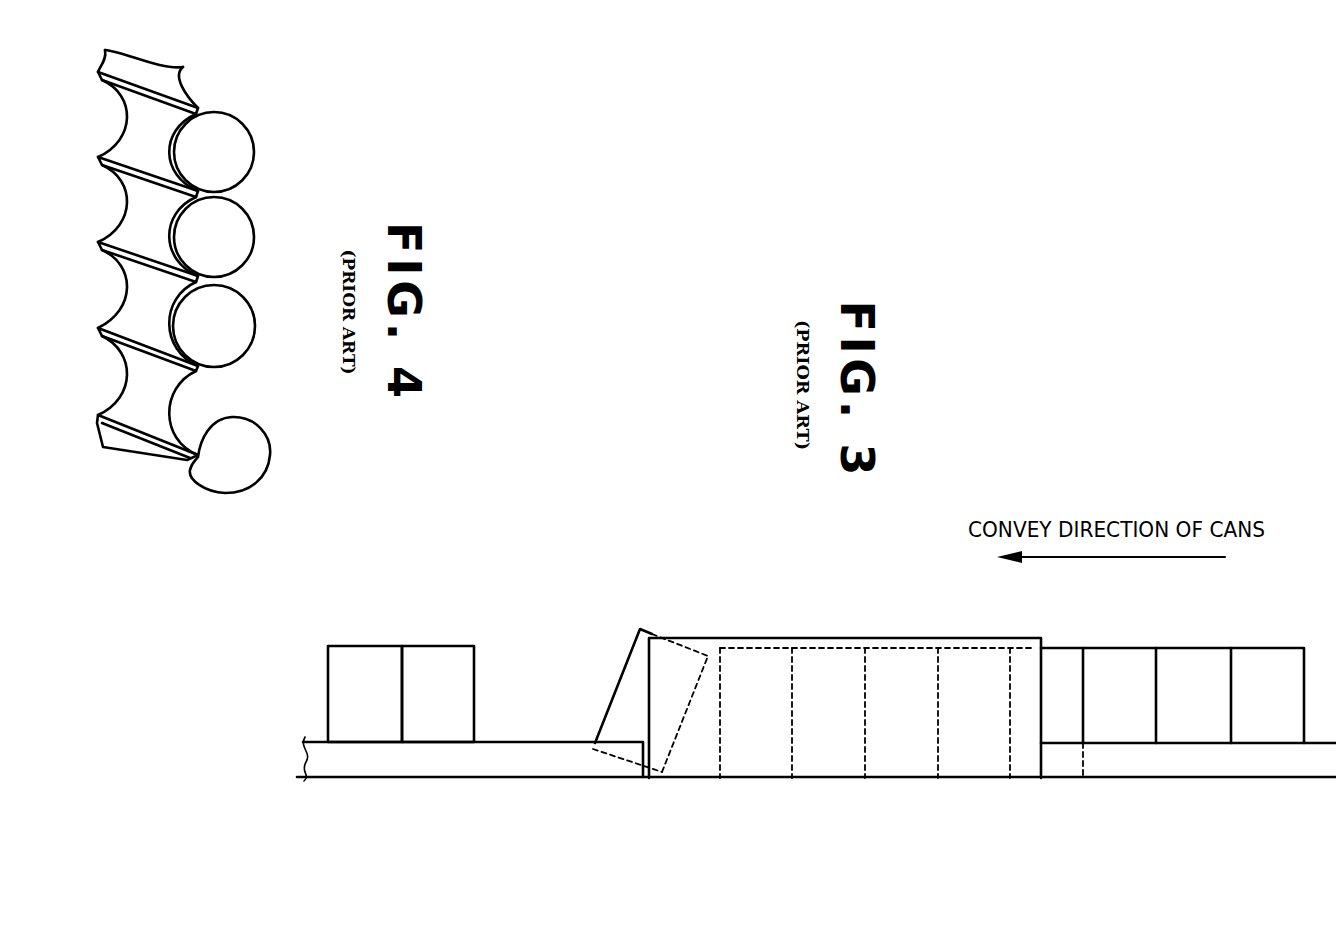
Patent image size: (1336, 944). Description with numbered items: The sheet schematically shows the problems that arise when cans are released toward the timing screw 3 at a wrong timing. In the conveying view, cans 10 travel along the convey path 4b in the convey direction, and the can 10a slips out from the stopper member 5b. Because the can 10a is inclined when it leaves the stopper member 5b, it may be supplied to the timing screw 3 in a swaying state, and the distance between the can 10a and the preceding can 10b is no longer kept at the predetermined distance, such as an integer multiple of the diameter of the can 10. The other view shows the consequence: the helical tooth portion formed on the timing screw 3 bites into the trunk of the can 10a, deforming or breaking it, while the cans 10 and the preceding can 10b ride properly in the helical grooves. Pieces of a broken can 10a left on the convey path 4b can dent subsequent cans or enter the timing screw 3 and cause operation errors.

In FIG. 4, the timing screw 3 is at (133, 382).
In FIG. 4, the can 10 is at (256, 152).
In FIG. 3, the can 10 is at (362, 644).
In FIG. 4, the can 10a is at (272, 458).
In FIG. 3, the can 10a is at (650, 628).
In FIG. 4, the preceding can 10b is at (256, 325).
In FIG. 3, the preceding can 10b is at (441, 645).
In FIG. 3, the convey path 4b is at (508, 760).
In FIG. 3, the stopper member 5b is at (755, 755).